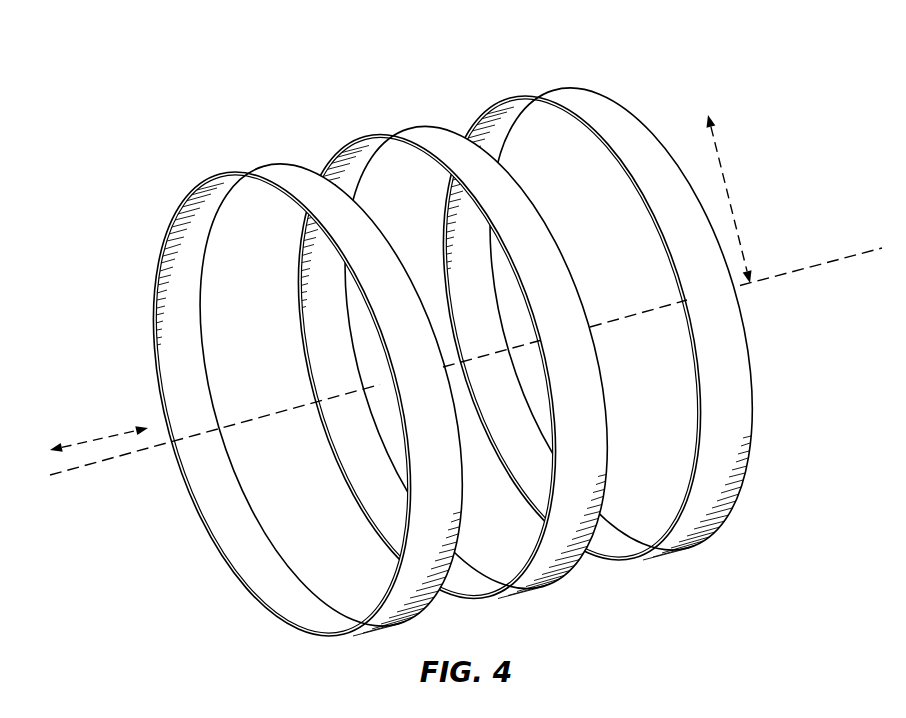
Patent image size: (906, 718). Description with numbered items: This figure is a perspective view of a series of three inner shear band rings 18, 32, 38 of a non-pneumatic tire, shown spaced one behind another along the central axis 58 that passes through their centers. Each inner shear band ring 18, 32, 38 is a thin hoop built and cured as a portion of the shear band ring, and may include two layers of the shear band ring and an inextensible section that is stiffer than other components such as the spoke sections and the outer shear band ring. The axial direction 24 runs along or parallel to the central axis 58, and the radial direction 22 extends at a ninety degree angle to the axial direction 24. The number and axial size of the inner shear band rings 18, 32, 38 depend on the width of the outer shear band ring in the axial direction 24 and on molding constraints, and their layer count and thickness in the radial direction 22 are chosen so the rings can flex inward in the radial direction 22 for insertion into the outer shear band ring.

The inner shear band ring 18 is at (300, 172).
The inner shear band ring 32 is at (437, 137).
The inner shear band ring 38 is at (580, 100).
The central axis 58 is at (798, 273).
The radial direction 22 is at (728, 198).
The axial direction 24 is at (100, 440).